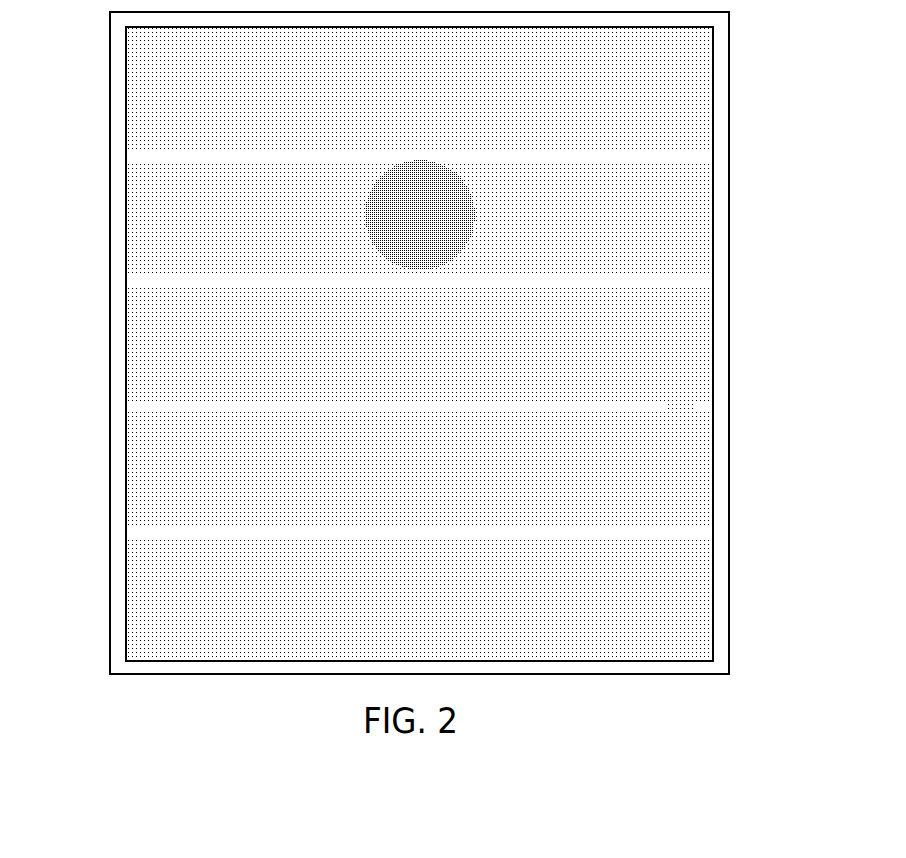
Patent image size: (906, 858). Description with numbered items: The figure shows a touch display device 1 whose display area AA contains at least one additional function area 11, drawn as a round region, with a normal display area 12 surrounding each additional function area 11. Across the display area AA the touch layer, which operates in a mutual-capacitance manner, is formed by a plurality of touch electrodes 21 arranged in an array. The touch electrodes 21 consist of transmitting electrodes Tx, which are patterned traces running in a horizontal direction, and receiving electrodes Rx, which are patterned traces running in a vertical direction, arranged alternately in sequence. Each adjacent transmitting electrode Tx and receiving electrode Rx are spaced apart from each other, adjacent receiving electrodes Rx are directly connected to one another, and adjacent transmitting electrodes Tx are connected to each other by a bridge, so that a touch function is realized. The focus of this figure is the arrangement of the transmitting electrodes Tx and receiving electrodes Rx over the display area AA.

The touch display device 1 is at (110, 78).
The display area AA is at (127, 177).
The additional function area 11 is at (473, 220).
The normal display area 12 is at (667, 245).
The touch electrodes 21 is at (680, 323).
The transmitting electrodes Tx is at (678, 407).
The receiving electrodes Rx is at (638, 465).